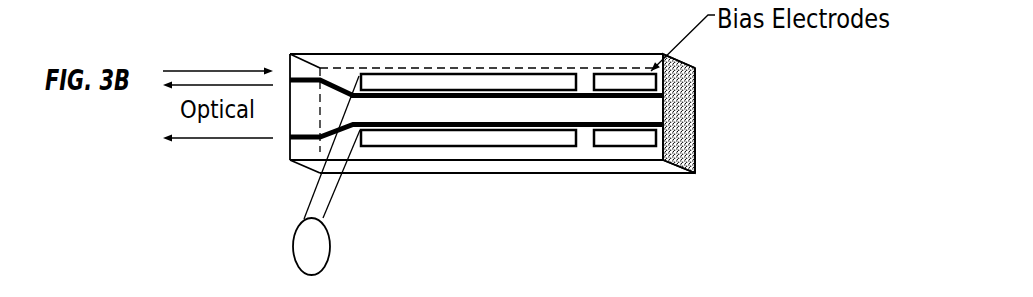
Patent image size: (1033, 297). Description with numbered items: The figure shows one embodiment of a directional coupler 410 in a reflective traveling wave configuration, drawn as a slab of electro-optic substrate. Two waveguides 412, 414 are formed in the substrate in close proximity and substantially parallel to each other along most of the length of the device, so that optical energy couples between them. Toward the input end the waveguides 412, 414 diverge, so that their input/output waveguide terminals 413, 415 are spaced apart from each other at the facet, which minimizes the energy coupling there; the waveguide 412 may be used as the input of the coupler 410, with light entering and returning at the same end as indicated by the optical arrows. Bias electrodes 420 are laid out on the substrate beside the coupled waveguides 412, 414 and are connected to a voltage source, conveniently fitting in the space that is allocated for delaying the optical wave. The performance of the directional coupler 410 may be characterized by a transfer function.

The directional coupler 410 is at (492, 160).
The waveguide 412 is at (507, 111).
The input/output waveguide terminal 413 is at (343, 56).
The waveguide 414 is at (476, 117).
The input/output waveguide terminal 415 is at (450, 145).
The bias electrodes 420 is at (474, 174).